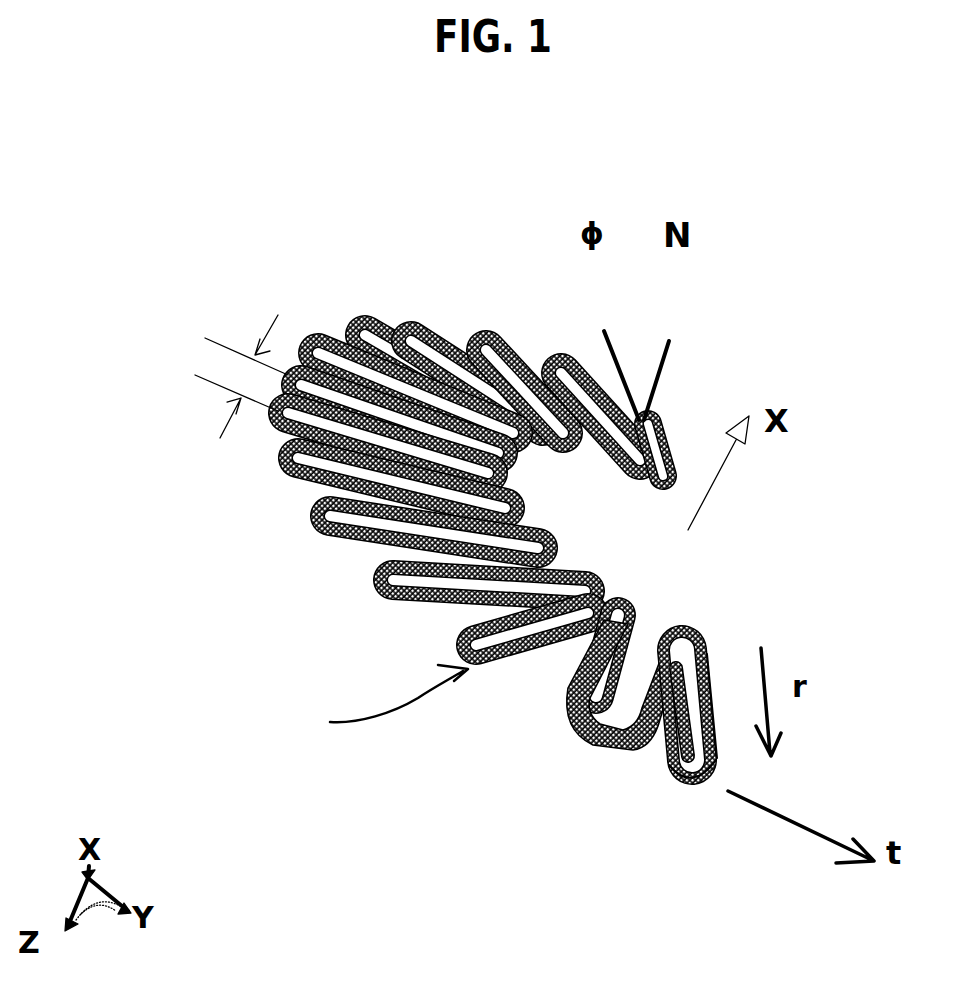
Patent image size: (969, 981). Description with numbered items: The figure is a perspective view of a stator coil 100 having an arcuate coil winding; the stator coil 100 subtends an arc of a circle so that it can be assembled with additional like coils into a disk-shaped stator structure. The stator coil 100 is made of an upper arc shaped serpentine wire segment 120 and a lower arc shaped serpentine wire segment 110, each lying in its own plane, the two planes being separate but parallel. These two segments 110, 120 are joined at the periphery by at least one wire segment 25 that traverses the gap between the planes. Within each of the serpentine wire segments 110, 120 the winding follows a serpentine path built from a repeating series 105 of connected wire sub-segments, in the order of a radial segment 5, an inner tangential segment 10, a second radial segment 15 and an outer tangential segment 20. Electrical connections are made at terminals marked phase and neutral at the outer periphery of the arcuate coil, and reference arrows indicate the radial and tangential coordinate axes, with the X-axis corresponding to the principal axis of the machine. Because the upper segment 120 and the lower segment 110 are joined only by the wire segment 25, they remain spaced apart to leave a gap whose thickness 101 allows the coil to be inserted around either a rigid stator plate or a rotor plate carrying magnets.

The stator coil 100 is at (392, 284).
The gap thickness 101 is at (213, 355).
The upper arc shaped serpentine wire segment 120 is at (680, 392).
The repeating series of connected wire sub-segments 105 is at (707, 610).
The inner tangential segment 10 is at (703, 627).
The radial segment 5 is at (717, 657).
The second radial segment 15 is at (637, 733).
The outer tangential segment 20 is at (575, 660).
The wire segment 25 is at (688, 768).
The lower arc shaped serpentine wire segment 110 is at (340, 711).